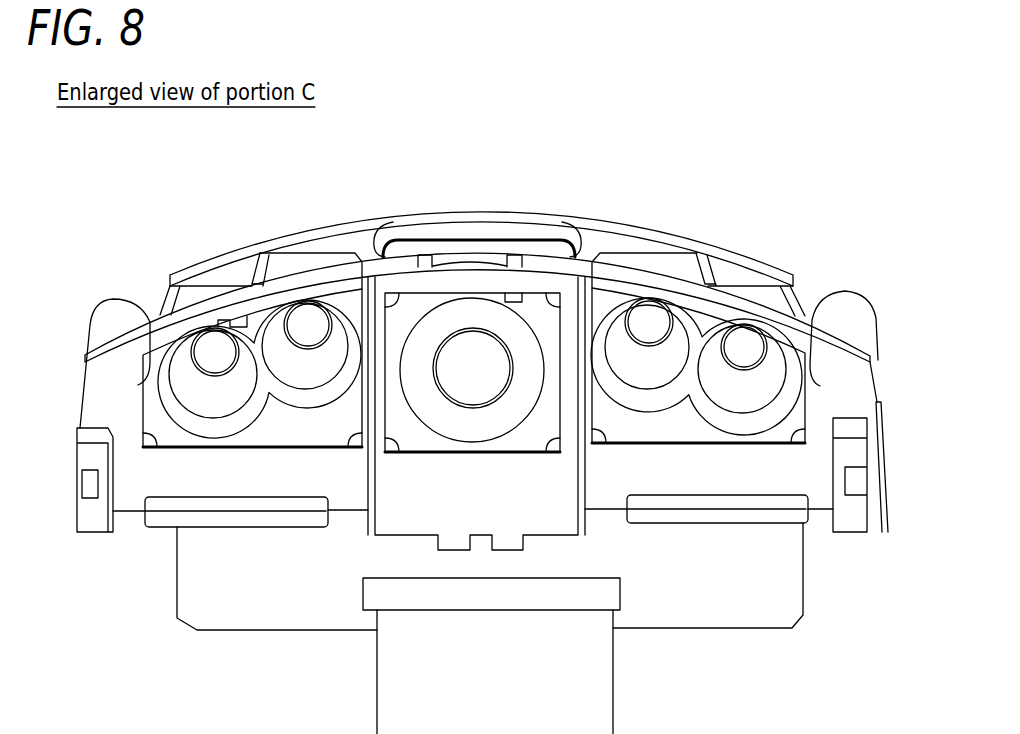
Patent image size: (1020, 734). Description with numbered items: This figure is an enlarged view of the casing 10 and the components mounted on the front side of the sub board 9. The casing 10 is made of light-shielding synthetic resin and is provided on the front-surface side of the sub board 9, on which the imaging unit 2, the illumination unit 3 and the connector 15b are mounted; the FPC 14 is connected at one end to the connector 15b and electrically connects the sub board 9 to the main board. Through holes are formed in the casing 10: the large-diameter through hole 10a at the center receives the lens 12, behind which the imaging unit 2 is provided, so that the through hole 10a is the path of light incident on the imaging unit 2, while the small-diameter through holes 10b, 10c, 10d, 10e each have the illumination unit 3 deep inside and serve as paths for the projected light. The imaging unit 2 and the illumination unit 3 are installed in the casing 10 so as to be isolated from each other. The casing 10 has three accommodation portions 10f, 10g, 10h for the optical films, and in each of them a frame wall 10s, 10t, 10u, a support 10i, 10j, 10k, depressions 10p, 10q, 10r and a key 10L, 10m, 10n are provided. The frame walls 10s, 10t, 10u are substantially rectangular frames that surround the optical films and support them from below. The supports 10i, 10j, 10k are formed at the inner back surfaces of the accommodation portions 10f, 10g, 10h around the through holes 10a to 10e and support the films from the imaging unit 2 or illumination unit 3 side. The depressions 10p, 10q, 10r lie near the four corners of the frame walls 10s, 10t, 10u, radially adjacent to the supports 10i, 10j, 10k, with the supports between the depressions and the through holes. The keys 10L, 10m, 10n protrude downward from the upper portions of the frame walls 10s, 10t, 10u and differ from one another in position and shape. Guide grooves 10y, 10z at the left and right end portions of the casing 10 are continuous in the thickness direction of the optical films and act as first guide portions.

The imaging unit 2 is at (467, 232).
The illumination unit 3 is at (303, 262).
The sub board 9 is at (268, 632).
The casing 10 is at (84, 395).
The through hole 10a is at (400, 298).
The through hole 10b is at (262, 279).
The through hole 10c is at (110, 330).
The through hole 10d is at (647, 320).
The through hole 10e is at (840, 350).
The accommodation portion 10f is at (517, 452).
The accommodation portion 10g is at (299, 452).
The accommodation portion 10h is at (742, 450).
The support 10i is at (445, 440).
The support 10j is at (270, 428).
The support 10k is at (662, 428).
The key 10L is at (510, 290).
The key 10m is at (232, 320).
The key 10n is at (745, 345).
The depression 10p is at (393, 290).
The depression 10q is at (352, 292).
The depression 10r is at (598, 298).
The frame wall 10s is at (487, 465).
The frame wall 10t is at (218, 455).
The frame wall 10u is at (707, 452).
The guide groove 10y is at (84, 483).
The guide groove 10z is at (862, 482).
The lens 12 is at (465, 352).
The FPC 14 is at (617, 678).
The connector 15b is at (620, 595).